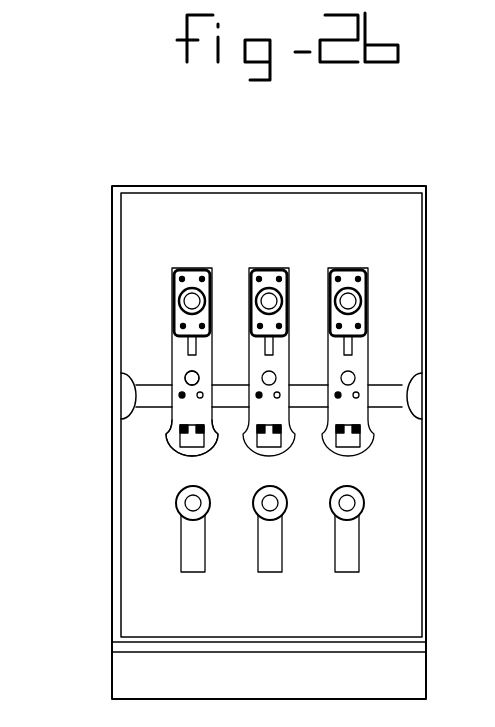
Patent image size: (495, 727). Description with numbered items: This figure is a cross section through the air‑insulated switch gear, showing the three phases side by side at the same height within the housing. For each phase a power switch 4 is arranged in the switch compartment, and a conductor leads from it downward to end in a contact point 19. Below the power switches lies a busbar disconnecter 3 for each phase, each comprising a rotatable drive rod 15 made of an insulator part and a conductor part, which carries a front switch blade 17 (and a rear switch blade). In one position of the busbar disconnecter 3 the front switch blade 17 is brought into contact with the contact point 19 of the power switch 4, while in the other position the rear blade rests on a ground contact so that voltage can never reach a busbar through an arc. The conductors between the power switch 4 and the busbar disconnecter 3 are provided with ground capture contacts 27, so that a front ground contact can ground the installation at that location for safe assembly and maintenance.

The busbar disconnecter 3 is at (372, 486).
The power switch 4 is at (347, 270).
The rotatable drive rod 15 is at (191, 494).
The front switch blade 17 is at (178, 521).
The contact point 19 is at (163, 445).
The ground capture contact 27 is at (190, 377).